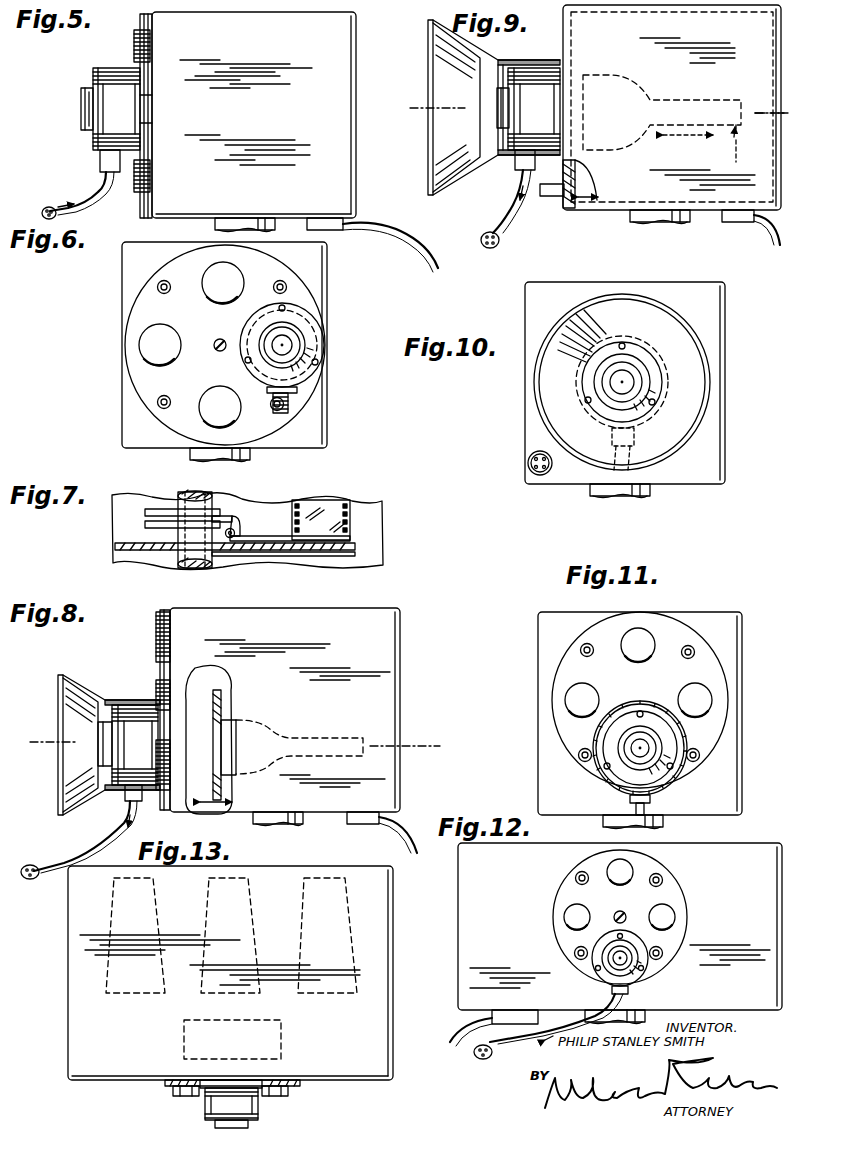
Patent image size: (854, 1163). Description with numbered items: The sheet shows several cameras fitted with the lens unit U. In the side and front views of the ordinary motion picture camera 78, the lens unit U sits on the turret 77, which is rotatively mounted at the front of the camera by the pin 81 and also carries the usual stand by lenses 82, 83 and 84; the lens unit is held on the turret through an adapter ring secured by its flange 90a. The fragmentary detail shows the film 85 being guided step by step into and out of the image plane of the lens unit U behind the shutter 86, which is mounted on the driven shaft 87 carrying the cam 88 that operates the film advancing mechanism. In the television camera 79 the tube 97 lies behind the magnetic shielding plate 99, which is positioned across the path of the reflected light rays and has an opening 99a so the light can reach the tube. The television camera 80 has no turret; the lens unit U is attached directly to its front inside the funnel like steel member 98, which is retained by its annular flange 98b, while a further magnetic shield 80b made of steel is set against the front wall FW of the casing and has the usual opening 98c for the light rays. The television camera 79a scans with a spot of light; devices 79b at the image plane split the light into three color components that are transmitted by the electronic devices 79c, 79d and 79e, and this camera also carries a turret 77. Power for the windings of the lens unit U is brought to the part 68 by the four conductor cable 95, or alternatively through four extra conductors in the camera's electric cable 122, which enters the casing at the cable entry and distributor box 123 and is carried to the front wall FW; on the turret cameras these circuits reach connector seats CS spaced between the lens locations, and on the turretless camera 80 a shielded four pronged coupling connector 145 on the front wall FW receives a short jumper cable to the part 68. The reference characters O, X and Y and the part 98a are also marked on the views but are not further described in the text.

In FIG. 9, the part 68 is at (517, 164).
In FIG. 8, the part 68 is at (126, 796).
In FIG. 11, the part 68 is at (648, 804).
In FIG. 5, the turret 77 is at (144, 213).
In FIG. 6, the turret 77 is at (302, 282).
In FIG. 8, the turret 77 is at (165, 798).
In FIG. 11, the turret 77 is at (582, 646).
In FIG. 12, the turret 77 is at (572, 873).
In FIG. 13, the turret 77 is at (302, 1086).
In FIG. 5, the motion picture camera 78 is at (345, 192).
In FIG. 6, the motion picture camera 78 is at (316, 428).
In FIG. 8, the television camera 79 is at (380, 652).
In FIG. 11, the television camera 79 is at (536, 651).
In FIG. 12, the television camera 79a is at (455, 946).
In FIG. 13, the television camera 79a is at (395, 932).
In FIG. 13, the light splitting devices 79b is at (284, 1040).
In FIG. 13, the electronic device 79c is at (162, 918).
In FIG. 13, the electronic device 79d is at (256, 918).
In FIG. 13, the electronic device 79e is at (350, 918).
In FIG. 9, the television camera 80 is at (768, 68).
In FIG. 10, the television camera 80 is at (716, 328).
In FIG. 9, the magnetic shield 80b is at (576, 196).
In FIG. 6, the pin 81 is at (215, 341).
In FIG. 12, the pin 81 is at (620, 917).
In FIG. 5, the stand-by lens 82 is at (134, 45).
In FIG. 6, the stand-by lens 82 is at (203, 270).
In FIG. 8, the stand-by lens 82 is at (150, 686).
In FIG. 11, the stand-by lens 82 is at (702, 696).
In FIG. 12, the stand-by lens 82 is at (672, 917).
In FIG. 13, the stand-by lens 82 is at (284, 1097).
In FIG. 6, the stand-by lens 83 is at (153, 334).
In FIG. 8, the stand-by lens 83 is at (156, 634).
In FIG. 11, the stand-by lens 83 is at (648, 640).
In FIG. 12, the stand-by lens 83 is at (630, 872).
In FIG. 13, the stand-by lens 83 is at (228, 1088).
In FIG. 5, the stand-by lens 84 is at (142, 176).
In FIG. 6, the stand-by lens 84 is at (206, 412).
In FIG. 11, the stand-by lens 84 is at (577, 694).
In FIG. 12, the stand-by lens 84 is at (566, 917).
In FIG. 13, the stand-by lens 84 is at (180, 1097).
In FIG. 7, the film 85 is at (270, 530).
In FIG. 7, the shutter 86 is at (278, 556).
In FIG. 7, the driven shaft 87 is at (213, 500).
In FIG. 7, the cam 88 is at (162, 509).
In FIG. 5, the flange 90a is at (143, 114).
In FIG. 5, the four-conductor cable 95 is at (100, 180).
In FIG. 9, the four-conductor cable 95 is at (522, 188).
In FIG. 10, the four-conductor cable 95 is at (612, 464).
In FIG. 8, the four-conductor cable 95 is at (130, 818).
In FIG. 11, the four-conductor cable 95 is at (634, 807).
In FIG. 12, the four-conductor cable 95 is at (630, 1004).
In FIG. 9, the tube 97 is at (734, 155).
In FIG. 8, the tube 97 is at (316, 736).
In FIG. 9, the funnel like member 98 is at (450, 56).
In FIG. 10, the funnel like member 98 is at (692, 438).
In FIG. 8, the funnel like member 98 is at (84, 684).
In FIG. 11, the funnel like member 98 is at (698, 758).
In FIG. 9, the hood flange 98a is at (560, 56).
In FIG. 9, the annular flange 98b is at (566, 68).
In FIG. 9, the opening 98c is at (587, 90).
In FIG. 8, the opening 98c is at (66, 686).
In FIG. 8, the magnetic shielding plate 99 is at (222, 700).
In FIG. 8, the opening 99a is at (218, 742).
In FIG. 5, the electric cable 122 is at (428, 248).
In FIG. 9, the electric cable 122 is at (776, 240).
In FIG. 8, the electric cable 122 is at (410, 830).
In FIG. 12, the electric cable 122 is at (462, 1030).
In FIG. 5, the cable entry and distributor box 123 is at (330, 228).
In FIG. 9, the cable entry and distributor box 123 is at (728, 226).
In FIG. 9, the coupling connector 145 is at (570, 204).
In FIG. 10, the coupling connector 145 is at (528, 470).
In FIG. 5, the lens unit U is at (102, 66).
In FIG. 9, the lens unit U is at (537, 76).
In FIG. 6, the lens unit U is at (320, 350).
In FIG. 10, the lens unit U is at (648, 385).
In FIG. 8, the lens unit U is at (130, 710).
In FIG. 11, the lens unit U is at (618, 768).
In FIG. 12, the lens unit U is at (626, 938).
In FIG. 13, the lens unit U is at (250, 1106).
In FIG. 9, the optical axis O is at (429, 109).
In FIG. 8, the optical axis O is at (45, 743).
In FIG. 9, the axis X is at (777, 113).
In FIG. 8, the axis X is at (45, 844).
In FIG. 9, the axis Y is at (557, 216).
In FIG. 8, the axis Y is at (222, 798).
In FIG. 6, the connector seats CS is at (160, 283).
In FIG. 11, the connector seats CS is at (592, 652).
In FIG. 12, the connector seats CS is at (574, 882).
In FIG. 6, the front wall FW is at (123, 410).
In FIG. 10, the front wall FW is at (525, 448).
In FIG. 11, the front wall FW is at (540, 756).
In FIG. 12, the front wall FW is at (460, 879).